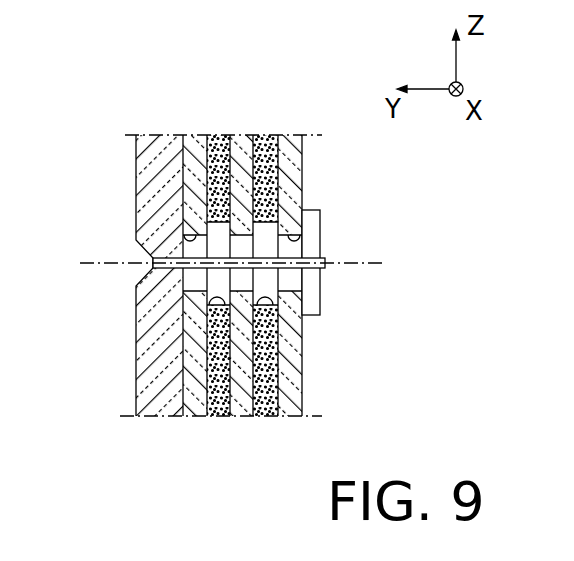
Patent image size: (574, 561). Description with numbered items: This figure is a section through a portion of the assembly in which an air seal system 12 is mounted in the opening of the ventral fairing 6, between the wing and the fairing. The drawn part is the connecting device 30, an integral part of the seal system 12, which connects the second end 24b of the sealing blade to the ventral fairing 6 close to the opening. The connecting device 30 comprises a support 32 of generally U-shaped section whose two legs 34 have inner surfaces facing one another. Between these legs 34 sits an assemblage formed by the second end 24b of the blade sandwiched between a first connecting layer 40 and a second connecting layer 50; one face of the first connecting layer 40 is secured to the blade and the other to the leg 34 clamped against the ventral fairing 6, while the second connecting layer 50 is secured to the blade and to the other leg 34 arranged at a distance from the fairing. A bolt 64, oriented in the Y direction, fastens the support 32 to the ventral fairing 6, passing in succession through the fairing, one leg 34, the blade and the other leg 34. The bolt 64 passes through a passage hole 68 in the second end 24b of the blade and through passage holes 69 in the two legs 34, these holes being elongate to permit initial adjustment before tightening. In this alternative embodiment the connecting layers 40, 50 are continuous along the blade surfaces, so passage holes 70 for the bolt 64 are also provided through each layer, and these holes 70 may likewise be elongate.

The ventral fairing 6 is at (152, 200).
The air seal system 12 is at (195, 426).
The second end of the blade 24b is at (240, 135).
The connecting device 30 is at (298, 290).
The support 32 is at (236, 224).
The legs of the U 34 is at (193, 135).
The first connecting layer 40 is at (217, 135).
The second connecting layer 50 is at (263, 135).
The bolt 64 is at (323, 276).
The passage hole 68 is at (253, 293).
The passage hole 69 is at (186, 238).
The passage hole 70 is at (207, 301).